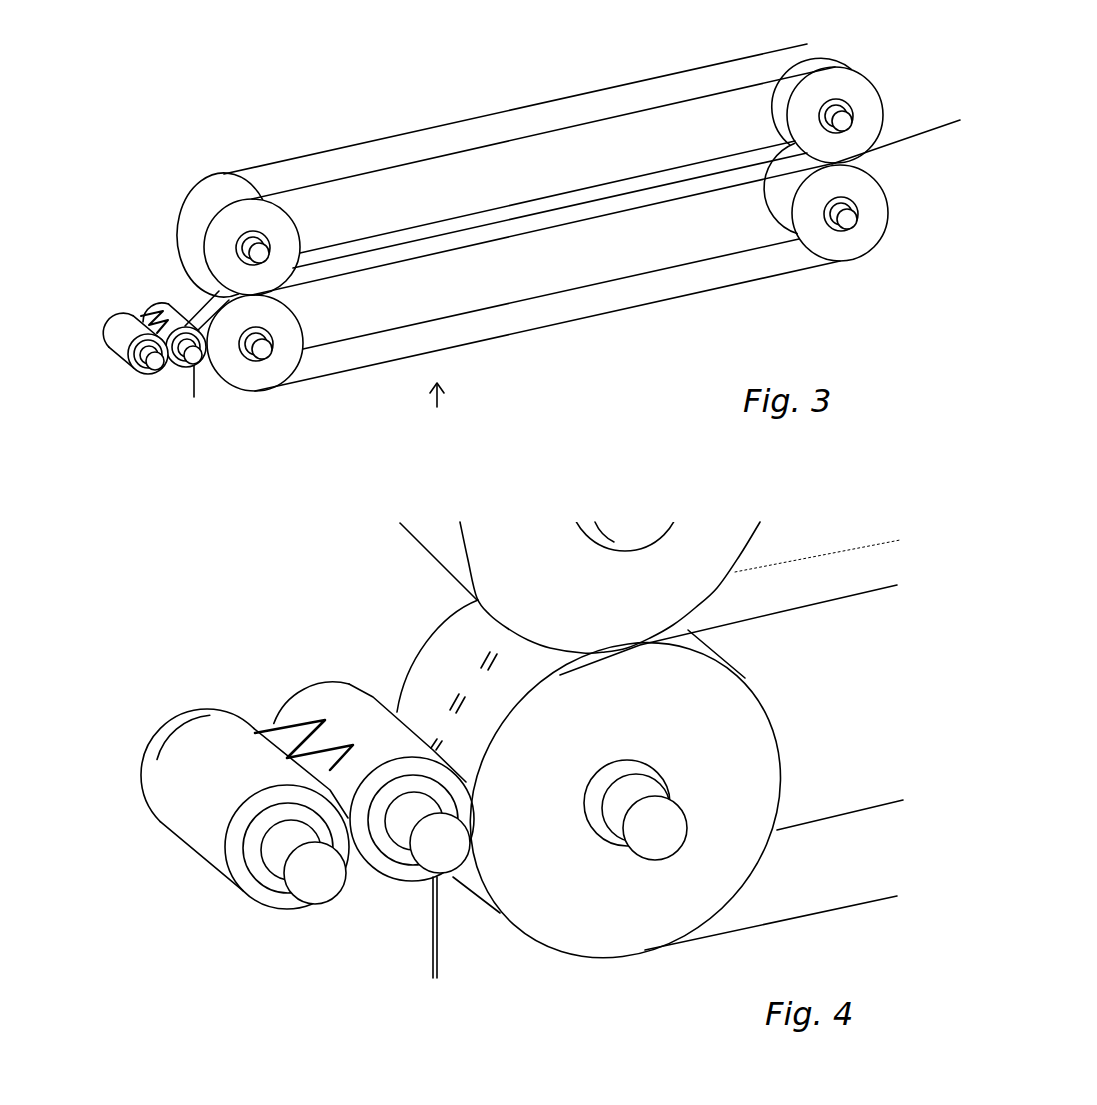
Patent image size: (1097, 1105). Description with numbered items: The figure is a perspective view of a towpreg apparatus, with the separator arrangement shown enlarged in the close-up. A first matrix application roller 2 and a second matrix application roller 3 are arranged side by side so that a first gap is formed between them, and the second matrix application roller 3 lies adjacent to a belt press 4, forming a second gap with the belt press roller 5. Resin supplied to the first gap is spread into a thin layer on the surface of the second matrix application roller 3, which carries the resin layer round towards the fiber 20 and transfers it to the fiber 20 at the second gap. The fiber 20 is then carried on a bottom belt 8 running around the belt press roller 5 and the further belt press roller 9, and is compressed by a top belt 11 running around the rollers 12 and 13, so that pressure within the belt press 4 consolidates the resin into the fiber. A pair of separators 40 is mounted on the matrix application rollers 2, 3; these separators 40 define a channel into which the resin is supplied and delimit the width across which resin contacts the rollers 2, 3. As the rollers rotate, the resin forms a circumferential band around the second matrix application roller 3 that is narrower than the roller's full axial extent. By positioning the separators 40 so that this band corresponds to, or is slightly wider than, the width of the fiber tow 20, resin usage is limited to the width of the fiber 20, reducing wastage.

In FIG. 3, the first matrix application roller 2 is at (107, 337).
In FIG. 4, the first matrix application roller 2 is at (215, 857).
In FIG. 3, the second matrix application roller 3 is at (165, 300).
In FIG. 4, the second matrix application roller 3 is at (397, 873).
In FIG. 3, the belt press 4 is at (434, 412).
In FIG. 3, the belt press roller 5 is at (252, 380).
In FIG. 4, the belt press roller 5 is at (758, 753).
In FIG. 3, the bottom belt 8 is at (617, 302).
In FIG. 3, the belt press roller 9 is at (856, 239).
In FIG. 3, the top belt 11 is at (445, 132).
In FIG. 3, the roller 12 is at (255, 212).
In FIG. 4, the roller 12 is at (696, 586).
In FIG. 3, the roller 13 is at (848, 82).
In FIG. 3, the fiber 20 is at (925, 131).
In FIG. 4, the fiber 20 is at (487, 657).
In FIG. 3, the separators 40 is at (147, 313).
In FIG. 4, the separators 40 is at (268, 728).